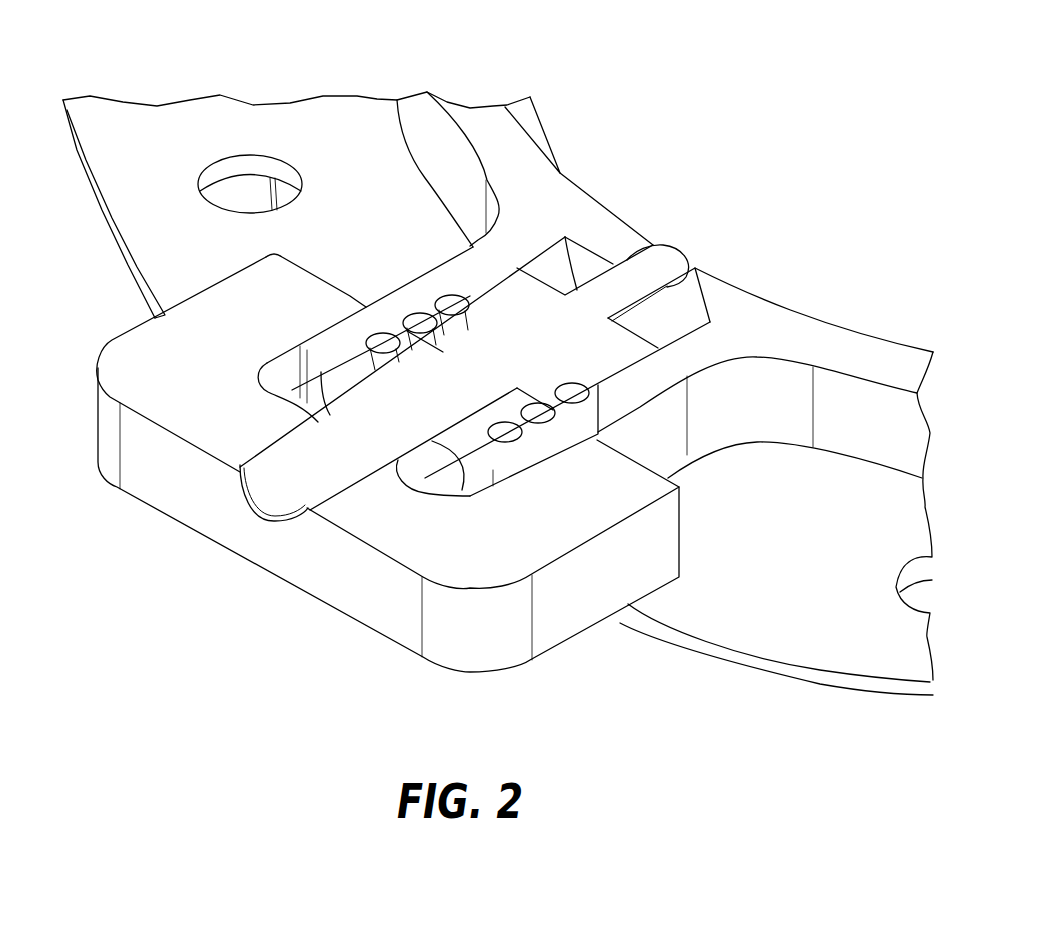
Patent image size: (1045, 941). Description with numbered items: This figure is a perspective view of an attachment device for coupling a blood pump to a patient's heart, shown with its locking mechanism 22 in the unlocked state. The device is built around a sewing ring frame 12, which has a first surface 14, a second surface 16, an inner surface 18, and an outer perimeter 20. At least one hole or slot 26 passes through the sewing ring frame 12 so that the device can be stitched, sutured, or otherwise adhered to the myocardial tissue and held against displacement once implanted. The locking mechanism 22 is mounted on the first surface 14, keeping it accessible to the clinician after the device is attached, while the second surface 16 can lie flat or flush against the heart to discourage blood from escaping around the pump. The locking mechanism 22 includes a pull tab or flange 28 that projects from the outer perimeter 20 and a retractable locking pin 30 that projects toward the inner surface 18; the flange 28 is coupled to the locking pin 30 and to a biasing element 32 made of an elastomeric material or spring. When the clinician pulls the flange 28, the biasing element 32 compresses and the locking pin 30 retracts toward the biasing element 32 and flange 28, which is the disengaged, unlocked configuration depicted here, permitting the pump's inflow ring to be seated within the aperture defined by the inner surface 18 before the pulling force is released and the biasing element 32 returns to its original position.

The sewing ring frame 12 is at (720, 653).
The first surface 14 is at (120, 138).
The second surface 16 is at (128, 278).
The inner surface 18 is at (593, 198).
The outer perimeter 20 is at (810, 663).
The locking mechanism 22 is at (160, 508).
The hole or slot 26 is at (248, 187).
The pull tab or flange 28 is at (353, 598).
The retractable locking pin 30 is at (652, 273).
The biasing element 32 is at (393, 340).